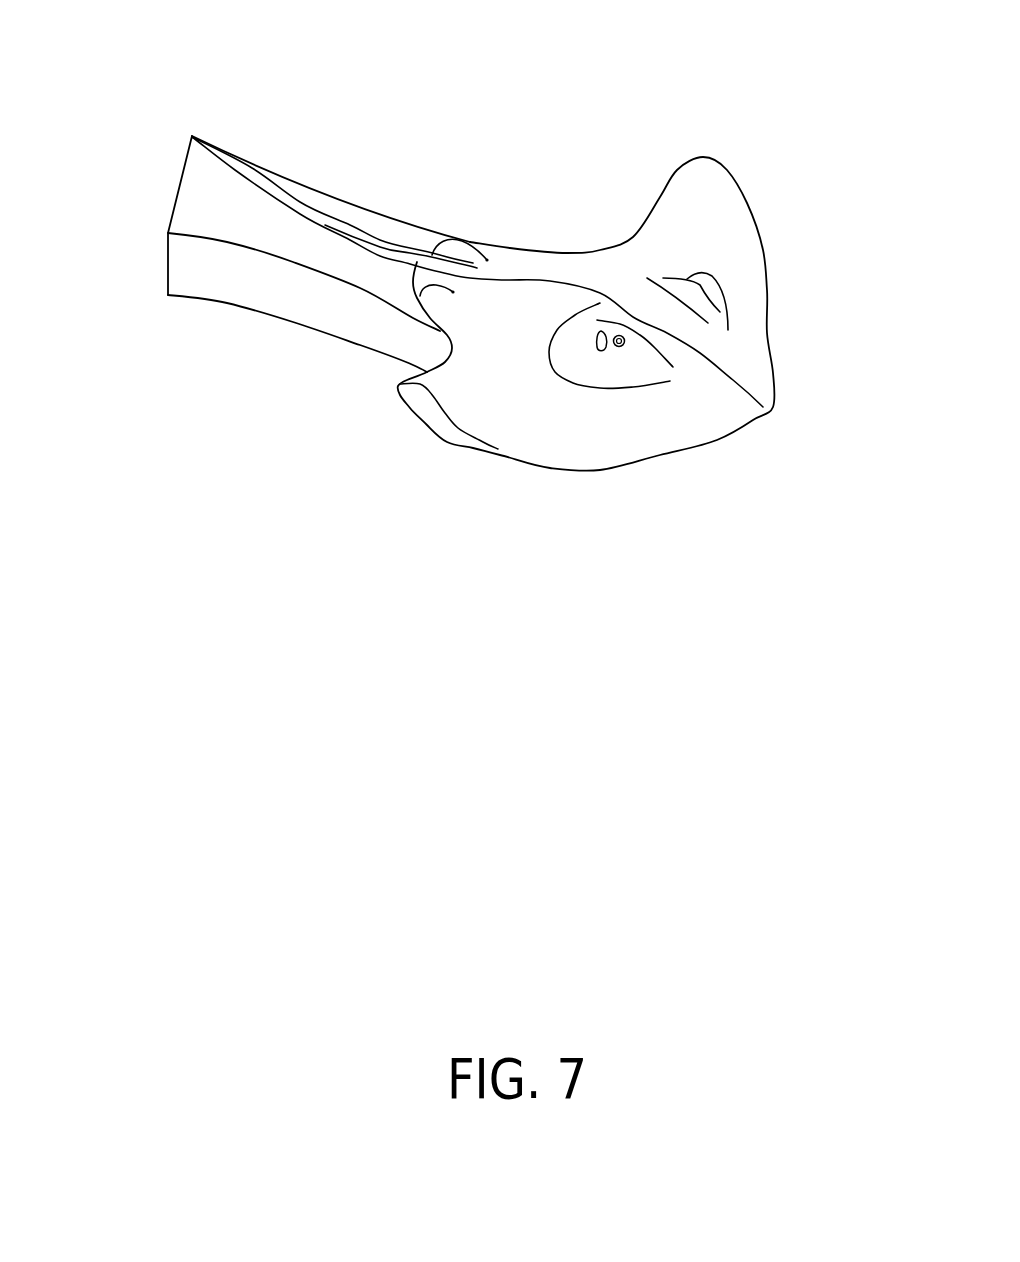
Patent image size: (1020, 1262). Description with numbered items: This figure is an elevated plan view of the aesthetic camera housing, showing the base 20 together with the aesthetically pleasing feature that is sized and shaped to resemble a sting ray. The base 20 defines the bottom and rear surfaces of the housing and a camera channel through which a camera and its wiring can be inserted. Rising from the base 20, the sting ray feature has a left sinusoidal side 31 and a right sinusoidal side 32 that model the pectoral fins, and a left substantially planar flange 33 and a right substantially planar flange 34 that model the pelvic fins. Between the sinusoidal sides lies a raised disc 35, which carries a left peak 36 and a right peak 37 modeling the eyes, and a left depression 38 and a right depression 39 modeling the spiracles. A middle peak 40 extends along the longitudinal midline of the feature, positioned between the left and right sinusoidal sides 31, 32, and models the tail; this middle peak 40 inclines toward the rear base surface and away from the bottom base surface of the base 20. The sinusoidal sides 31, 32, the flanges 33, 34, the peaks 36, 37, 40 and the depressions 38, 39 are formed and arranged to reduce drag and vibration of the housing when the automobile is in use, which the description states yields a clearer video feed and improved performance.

The base 20 is at (145, 264).
The left sinusoidal side 31 is at (425, 423).
The right sinusoidal side 32 is at (697, 170).
The left substantially planar flange 33 is at (427, 275).
The right substantially planar flange 34 is at (453, 250).
The raised disc 35 is at (530, 307).
The left peak 36 is at (617, 347).
The right peak 37 is at (587, 270).
The left depression 38 is at (597, 353).
The right depression 39 is at (683, 280).
The middle peak 40 is at (258, 183).